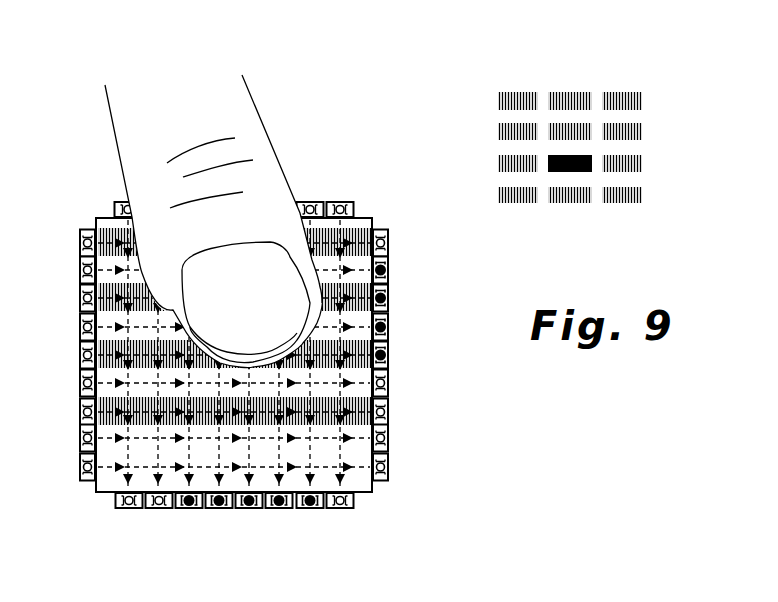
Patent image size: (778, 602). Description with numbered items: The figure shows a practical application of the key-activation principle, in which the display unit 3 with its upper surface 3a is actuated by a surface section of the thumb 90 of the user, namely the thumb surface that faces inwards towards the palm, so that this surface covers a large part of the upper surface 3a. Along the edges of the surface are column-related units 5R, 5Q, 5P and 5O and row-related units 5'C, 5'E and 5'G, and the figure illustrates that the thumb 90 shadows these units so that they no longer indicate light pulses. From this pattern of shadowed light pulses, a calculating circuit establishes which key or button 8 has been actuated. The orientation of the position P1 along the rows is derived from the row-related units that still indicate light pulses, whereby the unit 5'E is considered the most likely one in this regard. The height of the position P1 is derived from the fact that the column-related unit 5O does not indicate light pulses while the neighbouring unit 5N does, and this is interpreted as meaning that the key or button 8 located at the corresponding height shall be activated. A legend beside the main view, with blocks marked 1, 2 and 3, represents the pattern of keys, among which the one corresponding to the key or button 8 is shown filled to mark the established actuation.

The thumb 90 is at (262, 132).
The position P1 is at (260, 327).
The upper surface 3a is at (108, 482).
The column-related unit 5R is at (404, 271).
The column-related unit 5Q is at (405, 299).
The column-related unit 5P is at (404, 328).
The column-related unit 5O is at (405, 356).
The column-related unit 5N is at (405, 384).
The row-related unit 5'C is at (156, 528).
The row-related unit 5'E is at (252, 542).
The row-related unit 5'G is at (348, 538).
The first electrode pattern block 1 is at (520, 92).
The second electrode pattern block 2 is at (567, 92).
The display unit 3 is at (622, 92).
The key or button 8 is at (592, 157).